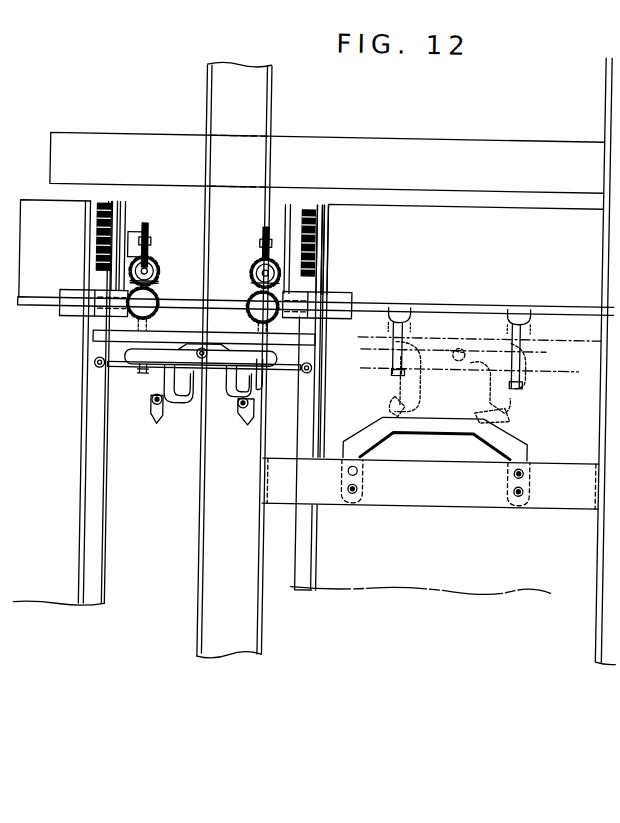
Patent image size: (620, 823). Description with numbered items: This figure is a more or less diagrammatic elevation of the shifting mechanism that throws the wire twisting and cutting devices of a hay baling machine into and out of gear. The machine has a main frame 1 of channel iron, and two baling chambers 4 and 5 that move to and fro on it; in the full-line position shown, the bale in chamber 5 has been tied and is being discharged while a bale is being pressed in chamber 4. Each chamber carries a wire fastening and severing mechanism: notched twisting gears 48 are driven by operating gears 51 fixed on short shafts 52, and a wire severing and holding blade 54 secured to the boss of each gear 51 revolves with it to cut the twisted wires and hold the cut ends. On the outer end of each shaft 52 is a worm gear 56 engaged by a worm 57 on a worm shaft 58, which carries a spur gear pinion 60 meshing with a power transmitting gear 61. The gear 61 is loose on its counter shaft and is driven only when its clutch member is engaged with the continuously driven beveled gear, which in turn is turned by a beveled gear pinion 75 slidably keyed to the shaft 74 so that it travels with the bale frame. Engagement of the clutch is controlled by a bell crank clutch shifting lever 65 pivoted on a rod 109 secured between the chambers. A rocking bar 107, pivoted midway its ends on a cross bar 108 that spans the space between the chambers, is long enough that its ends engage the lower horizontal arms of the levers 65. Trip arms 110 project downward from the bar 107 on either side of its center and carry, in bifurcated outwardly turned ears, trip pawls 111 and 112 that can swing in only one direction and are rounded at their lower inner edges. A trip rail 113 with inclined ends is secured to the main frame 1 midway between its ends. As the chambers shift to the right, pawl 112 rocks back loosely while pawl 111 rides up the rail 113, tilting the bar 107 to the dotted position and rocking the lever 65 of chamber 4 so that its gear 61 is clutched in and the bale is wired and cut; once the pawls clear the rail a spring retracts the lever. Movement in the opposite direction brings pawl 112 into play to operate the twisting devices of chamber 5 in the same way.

The main frame 1 is at (210, 600).
The baling chamber 4 is at (325, 297).
The baling chamber 5 is at (285, 407).
The twisting gear 48 is at (103, 206).
The operating gear 51 is at (345, 250).
The short shaft 52 is at (148, 245).
The wire severing and holding blade 54 is at (115, 207).
The worm gear 56 is at (143, 232).
The worm 57 is at (158, 272).
The worm shaft 58 is at (150, 268).
The spur gear pinion 60 is at (160, 282).
The power transmitting gear 61 is at (156, 318).
The bell crank clutch shifting lever 65 is at (146, 372).
The shaft 74 is at (438, 308).
The beveled gear pinion 75 is at (108, 320).
The rocking bar 107 is at (110, 364).
The cross bar 108 is at (125, 352).
The rod or shaft 109 is at (190, 395).
The trip arm 110 is at (150, 405).
The trip pawl 111 is at (160, 430).
The trip pawl 112 is at (243, 428).
The trip rail 113 is at (431, 462).